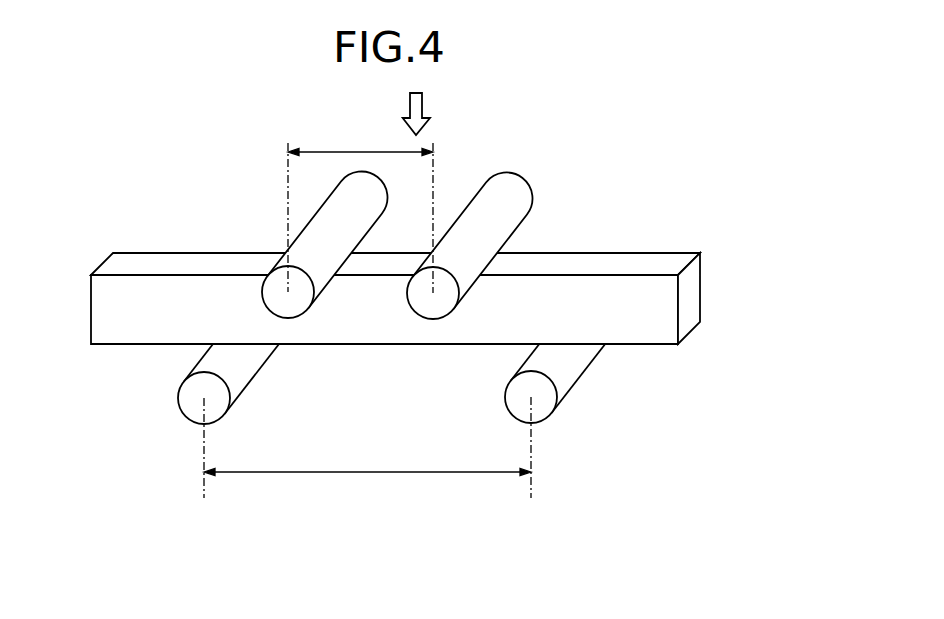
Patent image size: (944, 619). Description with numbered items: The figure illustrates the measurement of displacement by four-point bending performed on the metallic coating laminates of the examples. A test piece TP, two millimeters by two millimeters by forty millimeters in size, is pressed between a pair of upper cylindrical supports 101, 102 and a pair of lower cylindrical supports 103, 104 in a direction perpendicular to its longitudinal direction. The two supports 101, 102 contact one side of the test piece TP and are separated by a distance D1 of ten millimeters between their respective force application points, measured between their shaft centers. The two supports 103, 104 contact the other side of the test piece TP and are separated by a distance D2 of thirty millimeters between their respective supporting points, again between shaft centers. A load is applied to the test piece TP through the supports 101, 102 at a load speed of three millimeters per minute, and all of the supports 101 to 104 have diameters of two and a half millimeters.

The cylindrical support 101 is at (268, 272).
The cylindrical support 102 is at (519, 177).
The cylindrical support 103 is at (247, 387).
The cylindrical support 104 is at (574, 387).
The test piece TP is at (663, 253).
The distance between force application points D1 is at (366, 151).
The distance between supporting points D2 is at (370, 474).